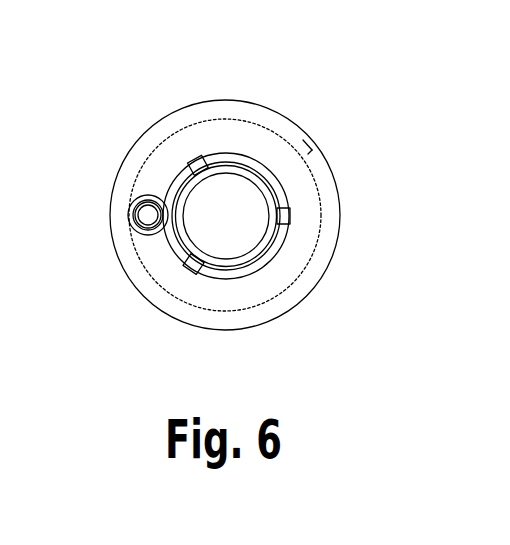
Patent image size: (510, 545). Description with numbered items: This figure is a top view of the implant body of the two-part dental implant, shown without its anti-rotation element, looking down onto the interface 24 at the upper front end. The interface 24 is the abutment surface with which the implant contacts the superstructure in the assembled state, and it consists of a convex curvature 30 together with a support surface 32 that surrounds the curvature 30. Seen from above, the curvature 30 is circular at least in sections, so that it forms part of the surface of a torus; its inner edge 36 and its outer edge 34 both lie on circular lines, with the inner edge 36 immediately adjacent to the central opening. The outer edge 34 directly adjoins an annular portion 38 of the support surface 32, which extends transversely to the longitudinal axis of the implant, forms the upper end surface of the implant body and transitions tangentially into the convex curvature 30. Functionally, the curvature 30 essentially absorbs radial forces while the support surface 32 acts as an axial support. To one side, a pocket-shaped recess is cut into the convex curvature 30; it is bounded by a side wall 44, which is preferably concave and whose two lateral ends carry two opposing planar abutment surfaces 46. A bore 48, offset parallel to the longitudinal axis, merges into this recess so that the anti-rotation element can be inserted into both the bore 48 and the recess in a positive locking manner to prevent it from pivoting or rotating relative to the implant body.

The interface 24 is at (291, 106).
The convex curvature 30 is at (283, 275).
The support surface 32 is at (268, 202).
The outer edge 34 is at (327, 212).
The inner edge 36 is at (224, 152).
The annular portion 38 is at (312, 138).
The side wall 44 is at (134, 201).
The planar abutment surfaces 46 is at (186, 262).
The bore 48 is at (138, 216).